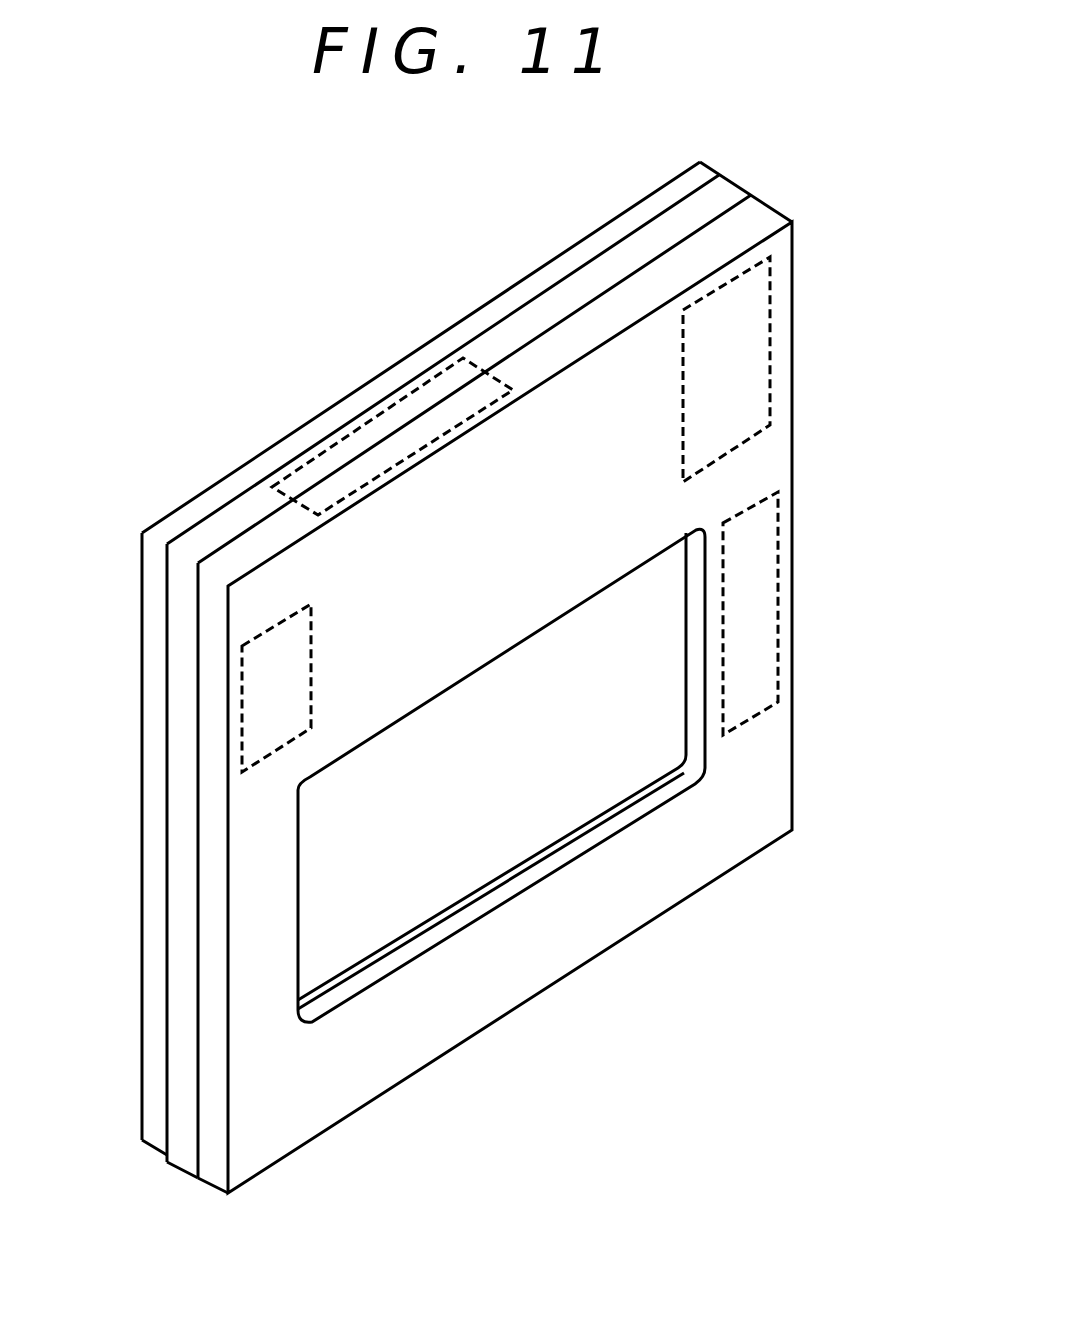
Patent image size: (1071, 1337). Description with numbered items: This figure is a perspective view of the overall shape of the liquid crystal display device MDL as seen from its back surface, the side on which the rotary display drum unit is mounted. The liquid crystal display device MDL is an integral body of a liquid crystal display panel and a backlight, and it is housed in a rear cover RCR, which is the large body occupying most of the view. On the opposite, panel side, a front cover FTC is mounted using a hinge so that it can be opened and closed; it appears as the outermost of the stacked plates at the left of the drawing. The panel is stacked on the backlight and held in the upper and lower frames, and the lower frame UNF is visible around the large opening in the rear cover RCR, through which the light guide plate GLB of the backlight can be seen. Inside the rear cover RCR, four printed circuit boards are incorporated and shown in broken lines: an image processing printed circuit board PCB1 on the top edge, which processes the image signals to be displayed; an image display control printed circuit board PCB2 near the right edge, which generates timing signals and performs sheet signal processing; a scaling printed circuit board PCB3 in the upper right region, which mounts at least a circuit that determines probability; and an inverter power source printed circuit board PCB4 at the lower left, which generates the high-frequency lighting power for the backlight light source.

The liquid crystal display device MDL is at (810, 513).
The rear cover RCR is at (792, 362).
The front cover FTC is at (141, 617).
The light guide plate GLB is at (470, 878).
The lower frame UNF is at (633, 803).
The image processing printed circuit board PCB1 is at (508, 382).
The image display control printed circuit board PCB2 is at (778, 633).
The scaling printed circuit board PCB3 is at (770, 280).
The inverter power source printed circuit board PCB4 is at (242, 745).